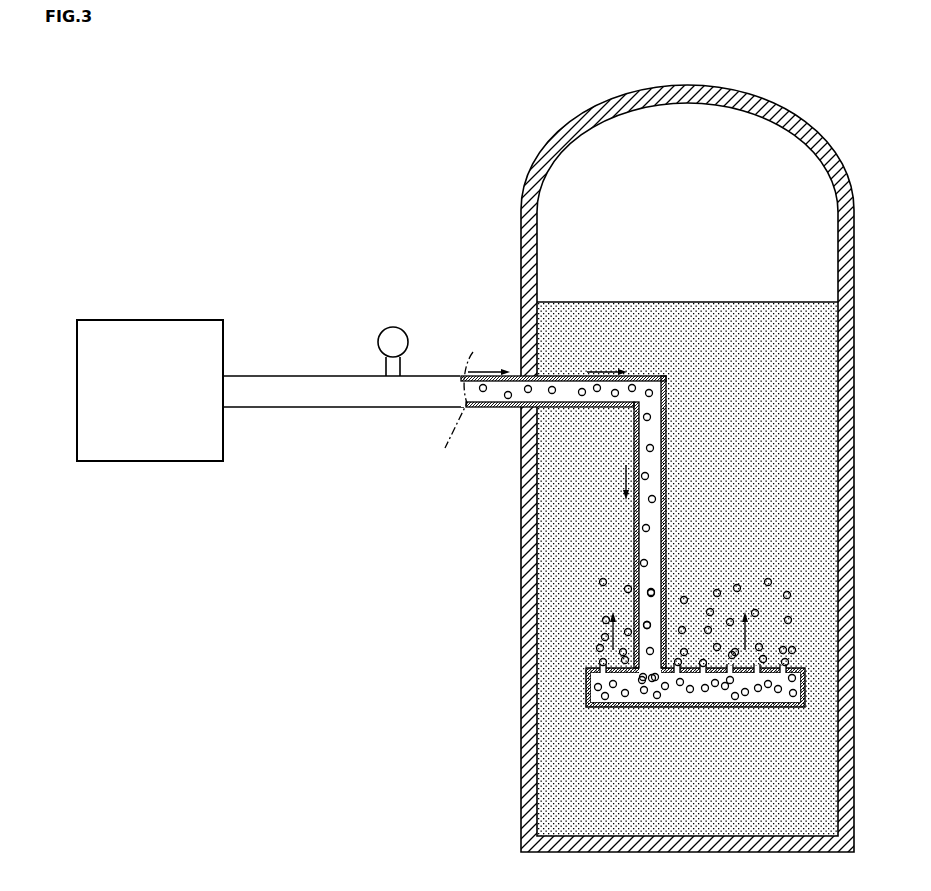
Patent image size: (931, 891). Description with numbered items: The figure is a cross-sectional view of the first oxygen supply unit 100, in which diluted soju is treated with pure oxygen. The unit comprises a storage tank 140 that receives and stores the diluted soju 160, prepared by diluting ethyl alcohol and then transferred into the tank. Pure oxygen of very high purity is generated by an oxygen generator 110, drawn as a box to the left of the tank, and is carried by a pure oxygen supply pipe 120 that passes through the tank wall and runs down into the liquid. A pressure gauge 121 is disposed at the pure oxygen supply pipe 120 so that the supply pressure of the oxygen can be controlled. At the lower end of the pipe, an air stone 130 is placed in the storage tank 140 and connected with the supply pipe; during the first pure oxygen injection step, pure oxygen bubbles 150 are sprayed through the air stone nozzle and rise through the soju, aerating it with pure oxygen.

The first oxygen supply unit 100 is at (526, 142).
The oxygen generator 110 is at (150, 320).
The pure oxygen supply pipe 120 is at (492, 407).
The pressure gauge 121 is at (393, 340).
The air stone 130 is at (587, 687).
The storage tank 140 is at (521, 250).
The pure oxygen bubbles 150 is at (645, 418).
The diluted soju 160 is at (553, 808).